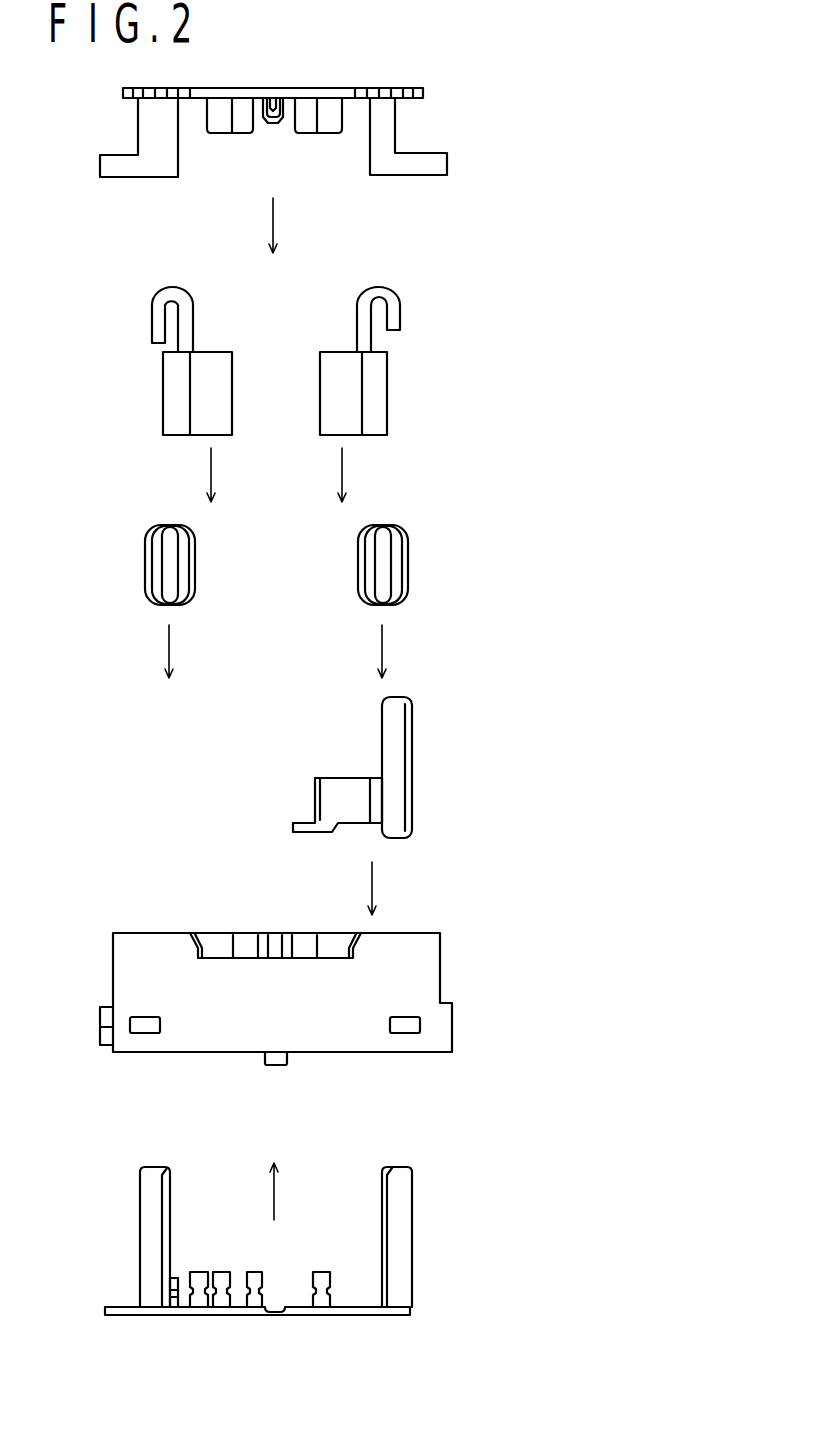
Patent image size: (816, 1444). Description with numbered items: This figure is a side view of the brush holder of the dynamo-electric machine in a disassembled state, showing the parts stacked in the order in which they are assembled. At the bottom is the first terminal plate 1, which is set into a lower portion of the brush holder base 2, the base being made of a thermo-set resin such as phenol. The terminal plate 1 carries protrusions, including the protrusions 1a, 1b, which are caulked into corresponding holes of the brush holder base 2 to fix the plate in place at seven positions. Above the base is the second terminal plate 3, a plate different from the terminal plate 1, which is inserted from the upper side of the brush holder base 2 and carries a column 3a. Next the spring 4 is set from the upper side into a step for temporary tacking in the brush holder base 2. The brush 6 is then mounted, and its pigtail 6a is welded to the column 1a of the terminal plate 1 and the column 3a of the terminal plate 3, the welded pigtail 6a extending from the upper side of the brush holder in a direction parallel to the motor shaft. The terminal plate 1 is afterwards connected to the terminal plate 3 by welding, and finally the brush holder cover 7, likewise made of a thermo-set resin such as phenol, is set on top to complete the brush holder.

The first terminal plate 1 is at (258, 1199).
The protrusion (column) of the first terminal plate 1a is at (398, 1177).
The protrusion of the first terminal plate 1b is at (222, 1280).
The brush holder base 2 is at (163, 952).
The second terminal plate 3 is at (392, 750).
The column of the second terminal plate 3a is at (400, 732).
The spring 4 is at (408, 550).
The brush 6 is at (305, 341).
The pigtail 6a is at (390, 300).
The brush holder cover 7 is at (390, 167).